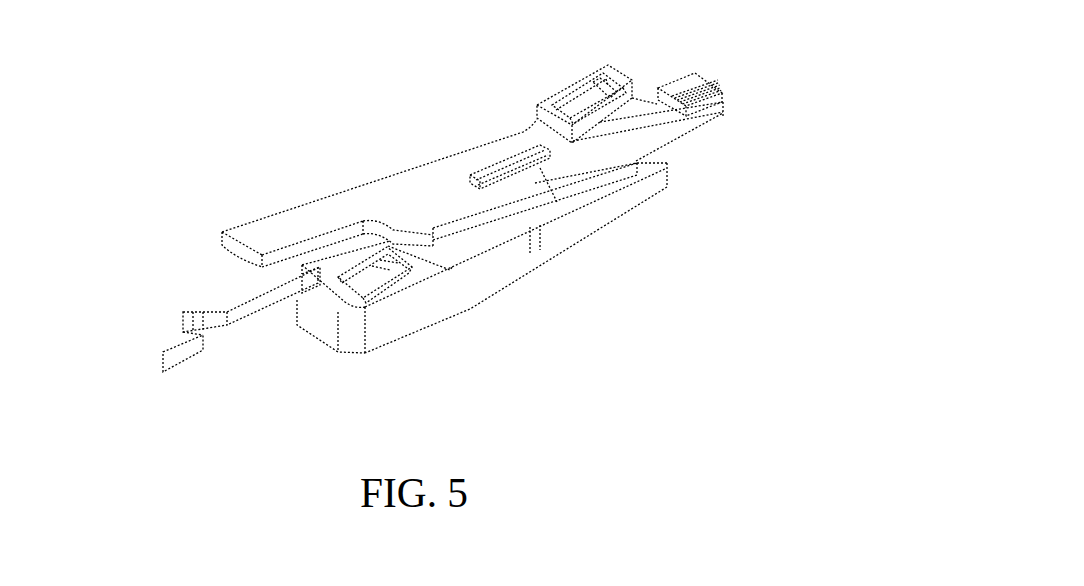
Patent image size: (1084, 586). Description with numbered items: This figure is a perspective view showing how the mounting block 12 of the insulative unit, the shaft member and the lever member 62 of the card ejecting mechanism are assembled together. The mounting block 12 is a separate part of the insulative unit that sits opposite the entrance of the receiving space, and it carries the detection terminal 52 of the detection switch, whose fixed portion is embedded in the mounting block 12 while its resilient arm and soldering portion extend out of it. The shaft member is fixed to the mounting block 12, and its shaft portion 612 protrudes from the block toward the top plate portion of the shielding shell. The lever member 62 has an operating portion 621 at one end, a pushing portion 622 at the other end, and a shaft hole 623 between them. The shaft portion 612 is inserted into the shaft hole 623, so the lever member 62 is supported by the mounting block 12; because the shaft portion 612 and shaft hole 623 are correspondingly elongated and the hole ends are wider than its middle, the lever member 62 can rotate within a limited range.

The mounting block 12 is at (497, 267).
The detection terminal 52 is at (257, 315).
The lever member 62 is at (395, 181).
The shaft portion 612 is at (510, 165).
The operating portion 621 is at (683, 86).
The pushing portion 622 is at (243, 237).
The shaft hole 623 is at (557, 202).